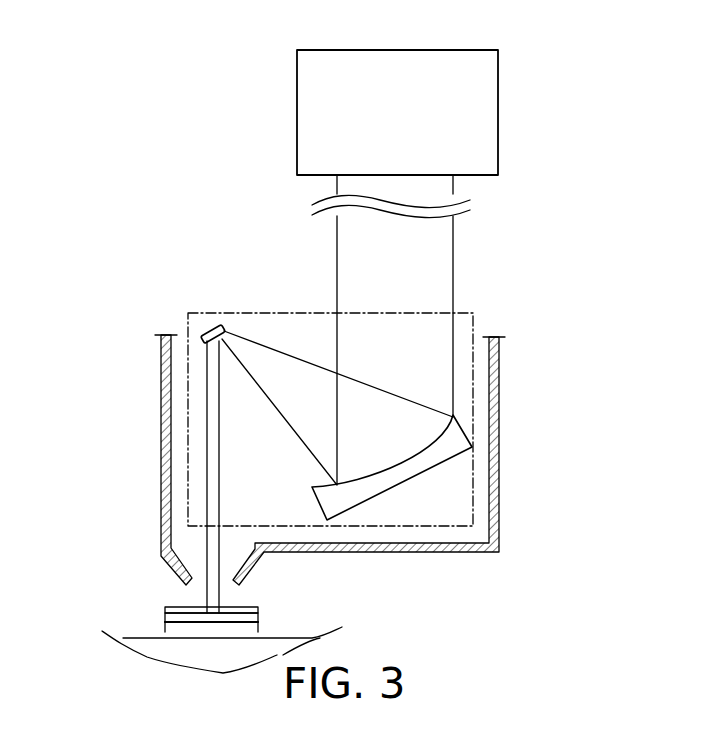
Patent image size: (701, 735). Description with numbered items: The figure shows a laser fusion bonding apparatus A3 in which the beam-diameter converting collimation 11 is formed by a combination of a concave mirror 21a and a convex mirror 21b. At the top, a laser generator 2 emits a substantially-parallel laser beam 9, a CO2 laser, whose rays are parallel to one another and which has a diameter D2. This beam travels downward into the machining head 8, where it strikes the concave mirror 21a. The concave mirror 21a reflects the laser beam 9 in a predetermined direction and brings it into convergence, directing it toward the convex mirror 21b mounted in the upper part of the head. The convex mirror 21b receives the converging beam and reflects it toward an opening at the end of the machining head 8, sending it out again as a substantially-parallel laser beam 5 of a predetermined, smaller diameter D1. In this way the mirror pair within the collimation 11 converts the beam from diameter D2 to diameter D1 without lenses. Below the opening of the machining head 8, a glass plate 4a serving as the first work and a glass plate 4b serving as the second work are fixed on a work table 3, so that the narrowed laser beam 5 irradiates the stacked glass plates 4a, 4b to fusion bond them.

The laser fusion bonding apparatus A3 is at (183, 175).
The laser generator 2 is at (498, 116).
The substantially-parallel laser beam 9 is at (453, 250).
The diameter of the laser beam D2 is at (300, 273).
The collimation 11 is at (467, 313).
The convex mirror 21b is at (208, 323).
The concave mirror 21a is at (423, 470).
The machining head 8 is at (160, 505).
The laser beam 5 is at (205, 540).
The predetermined diameter of the laser beam D1 is at (180, 468).
The glass plate 4a is at (160, 612).
The glass plate 4b is at (160, 623).
The work table 3 is at (140, 637).